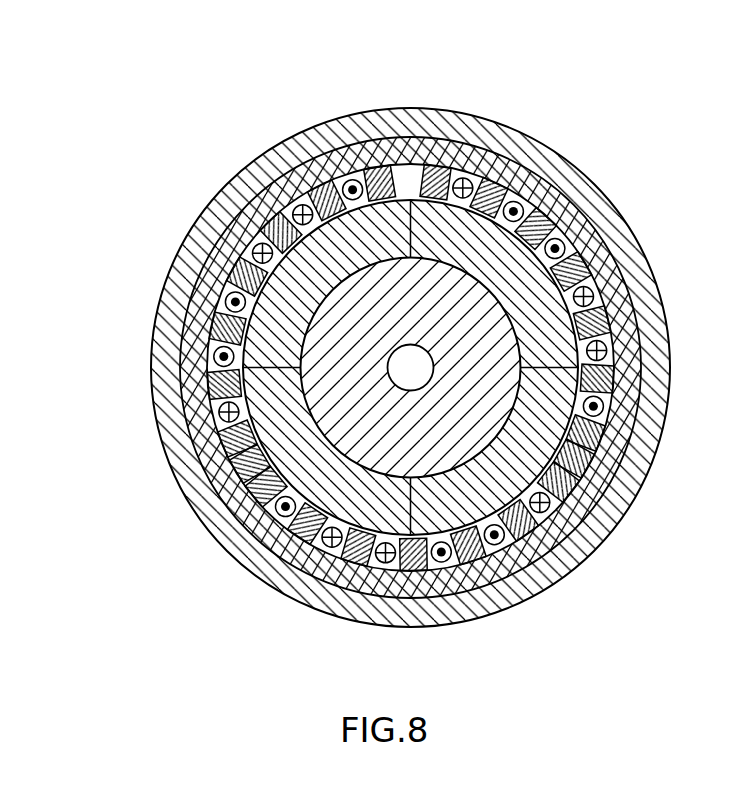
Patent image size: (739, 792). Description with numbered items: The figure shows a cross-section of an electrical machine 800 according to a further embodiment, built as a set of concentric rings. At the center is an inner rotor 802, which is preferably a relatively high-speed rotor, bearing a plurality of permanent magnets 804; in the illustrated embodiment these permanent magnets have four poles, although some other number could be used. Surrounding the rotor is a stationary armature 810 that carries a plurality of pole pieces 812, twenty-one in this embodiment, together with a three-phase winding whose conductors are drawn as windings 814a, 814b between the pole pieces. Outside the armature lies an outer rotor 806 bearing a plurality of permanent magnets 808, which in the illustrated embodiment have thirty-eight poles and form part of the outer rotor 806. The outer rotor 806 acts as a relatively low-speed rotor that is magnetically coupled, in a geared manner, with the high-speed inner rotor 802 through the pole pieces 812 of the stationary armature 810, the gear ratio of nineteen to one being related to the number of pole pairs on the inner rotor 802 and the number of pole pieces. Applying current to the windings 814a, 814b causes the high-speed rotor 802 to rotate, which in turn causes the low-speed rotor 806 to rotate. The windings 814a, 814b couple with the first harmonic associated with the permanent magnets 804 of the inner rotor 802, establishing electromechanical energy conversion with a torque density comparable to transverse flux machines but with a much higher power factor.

The electrical machine 800 is at (177, 182).
The inner rotor 802 is at (401, 422).
The permanent magnets 804 is at (325, 291).
The outer rotor 806 is at (157, 393).
The permanent magnets 808 is at (186, 296).
The stationary armature 810 is at (240, 470).
The pole pieces 812 is at (254, 502).
The winding 814a is at (214, 357).
The winding 814b is at (221, 418).